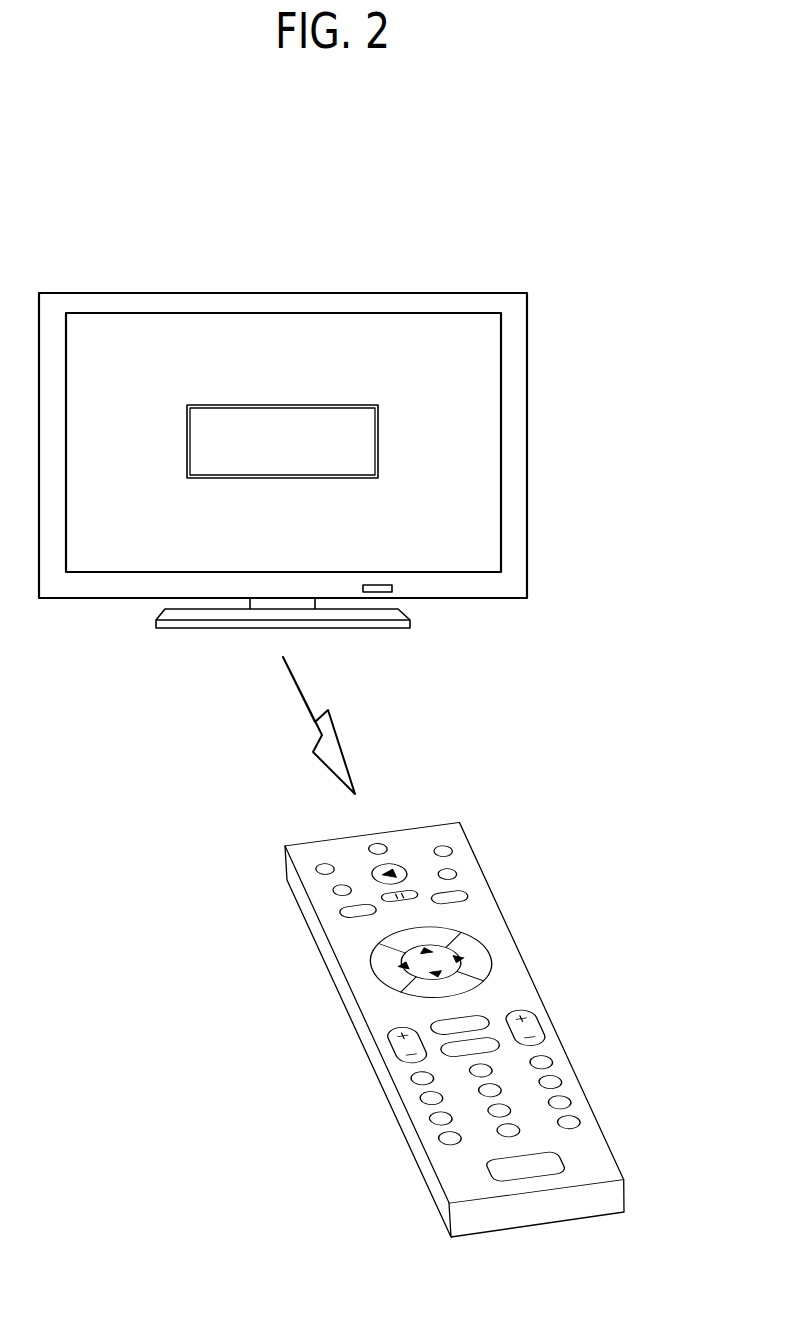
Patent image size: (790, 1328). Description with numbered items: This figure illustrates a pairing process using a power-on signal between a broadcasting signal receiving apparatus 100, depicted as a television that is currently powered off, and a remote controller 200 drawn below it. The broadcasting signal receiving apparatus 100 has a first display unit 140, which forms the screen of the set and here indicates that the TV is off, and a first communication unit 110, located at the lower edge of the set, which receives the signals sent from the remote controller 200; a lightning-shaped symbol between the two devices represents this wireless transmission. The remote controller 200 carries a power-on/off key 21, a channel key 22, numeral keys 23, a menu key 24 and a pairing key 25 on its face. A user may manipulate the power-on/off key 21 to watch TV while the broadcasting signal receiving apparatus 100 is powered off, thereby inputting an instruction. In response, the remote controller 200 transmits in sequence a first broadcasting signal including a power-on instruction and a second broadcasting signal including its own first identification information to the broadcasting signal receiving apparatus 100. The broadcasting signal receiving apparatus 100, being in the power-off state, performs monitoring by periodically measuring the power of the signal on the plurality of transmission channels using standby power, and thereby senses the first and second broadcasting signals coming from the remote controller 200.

The broadcasting signal receiving apparatus 100 is at (177, 300).
The first display unit 140 is at (304, 340).
The first communication unit 110 is at (375, 592).
The remote controller 200 is at (600, 1148).
The power-on/off key 21 is at (450, 847).
The channel key 22 is at (533, 1022).
The numeral keys 23 is at (553, 1079).
The menu key 24 is at (468, 1022).
The pairing key 25 is at (316, 869).